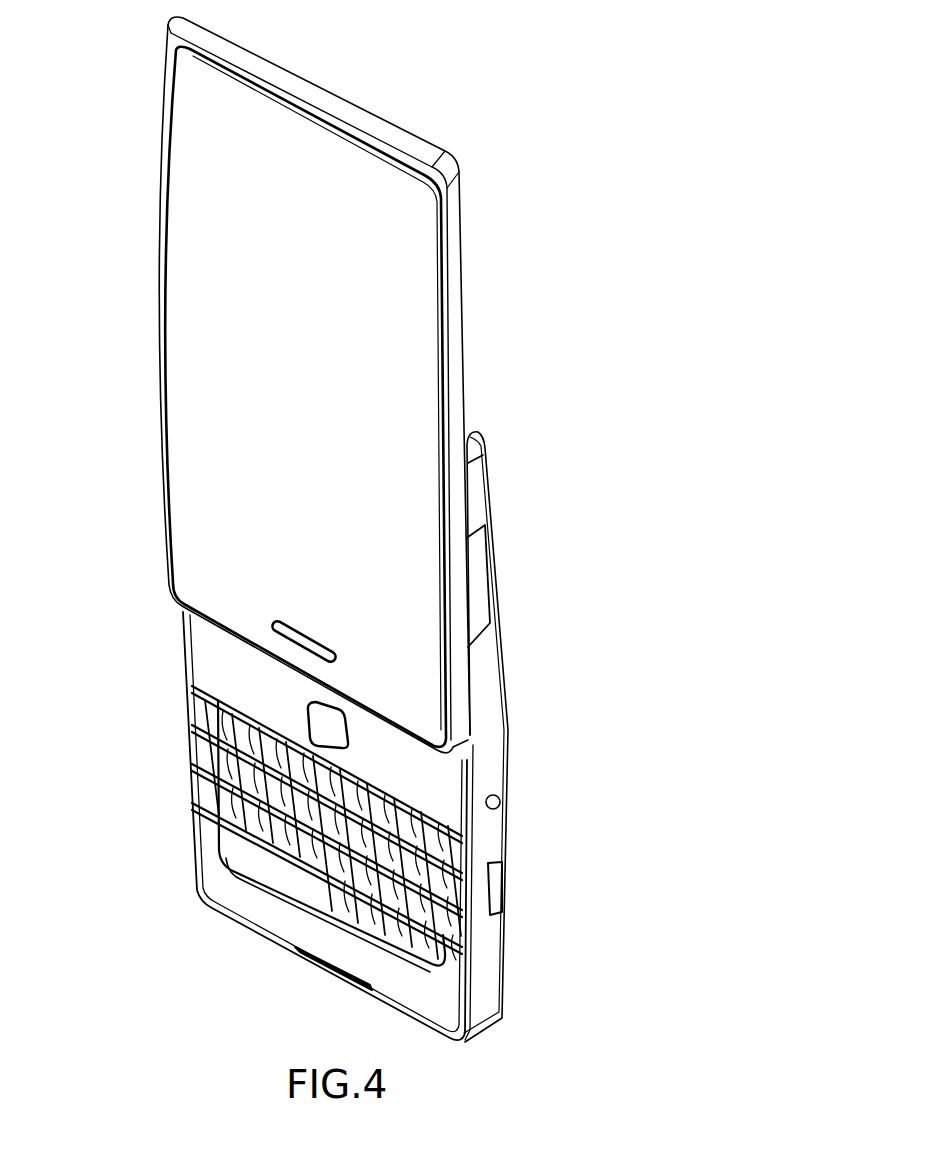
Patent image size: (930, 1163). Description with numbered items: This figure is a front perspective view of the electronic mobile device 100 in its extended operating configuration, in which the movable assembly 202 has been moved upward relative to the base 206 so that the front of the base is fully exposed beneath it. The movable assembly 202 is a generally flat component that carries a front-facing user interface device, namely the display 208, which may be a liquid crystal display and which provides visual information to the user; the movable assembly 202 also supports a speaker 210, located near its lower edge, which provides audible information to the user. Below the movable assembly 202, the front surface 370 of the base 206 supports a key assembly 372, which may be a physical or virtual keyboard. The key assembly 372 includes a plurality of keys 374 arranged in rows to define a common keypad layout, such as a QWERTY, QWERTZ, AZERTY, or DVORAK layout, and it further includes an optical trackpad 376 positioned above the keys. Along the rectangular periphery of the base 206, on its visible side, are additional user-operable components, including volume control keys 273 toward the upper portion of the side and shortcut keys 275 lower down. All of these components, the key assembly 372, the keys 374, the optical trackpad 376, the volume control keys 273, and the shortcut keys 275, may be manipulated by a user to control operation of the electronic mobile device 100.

The electronic mobile device 100 is at (533, 164).
The movable assembly 202 is at (457, 313).
The display 208 is at (165, 458).
The speaker 210 is at (303, 652).
The base 206 is at (500, 949).
The volume control keys 273 is at (490, 580).
The shortcut keys 275 is at (505, 891).
The front surface 370 is at (195, 655).
The key assembly 372 is at (200, 800).
The keys 374 is at (196, 756).
The optical trackpad 376 is at (342, 743).